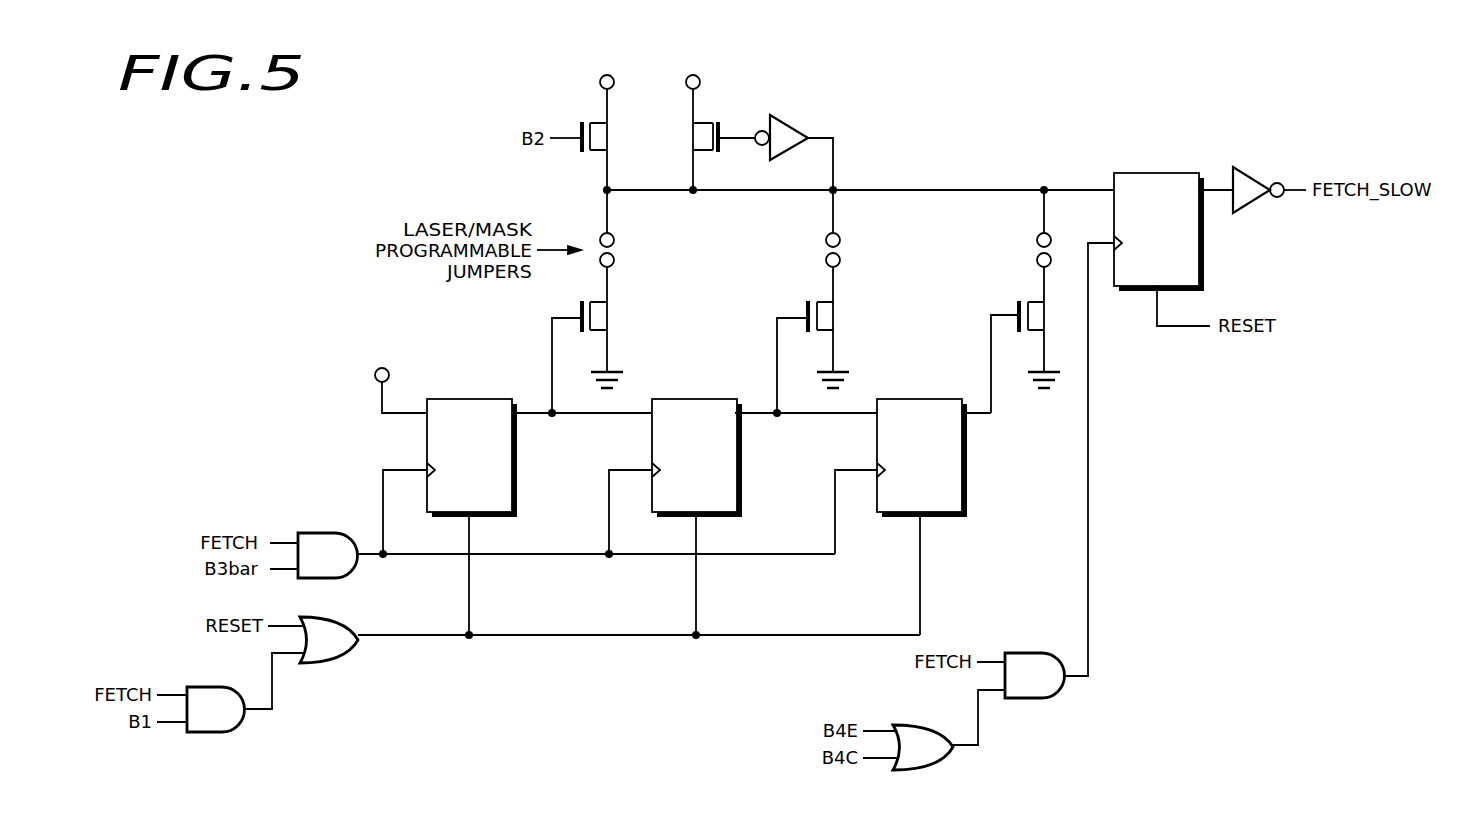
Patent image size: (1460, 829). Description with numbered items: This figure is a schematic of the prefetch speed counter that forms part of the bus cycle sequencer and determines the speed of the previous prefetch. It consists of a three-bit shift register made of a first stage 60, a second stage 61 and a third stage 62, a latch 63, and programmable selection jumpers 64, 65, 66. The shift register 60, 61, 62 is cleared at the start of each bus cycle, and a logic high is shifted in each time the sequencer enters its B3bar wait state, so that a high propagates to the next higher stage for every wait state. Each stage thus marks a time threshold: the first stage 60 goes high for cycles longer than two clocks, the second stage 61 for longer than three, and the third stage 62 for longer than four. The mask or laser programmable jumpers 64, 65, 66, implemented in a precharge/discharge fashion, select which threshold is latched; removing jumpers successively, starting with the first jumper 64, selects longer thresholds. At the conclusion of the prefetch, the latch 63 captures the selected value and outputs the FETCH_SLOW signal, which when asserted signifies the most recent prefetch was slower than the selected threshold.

The first stage of three-bit shift register 60 is at (467, 399).
The second stage of three-bit shift register 61 is at (690, 399).
The third stage of three-bit shift register 62 is at (915, 399).
The latch 63 is at (1185, 173).
The first programmable selection jumper 64 is at (615, 251).
The programmable selection jumper 65 is at (841, 251).
The programmable selection jumper 66 is at (1026, 249).